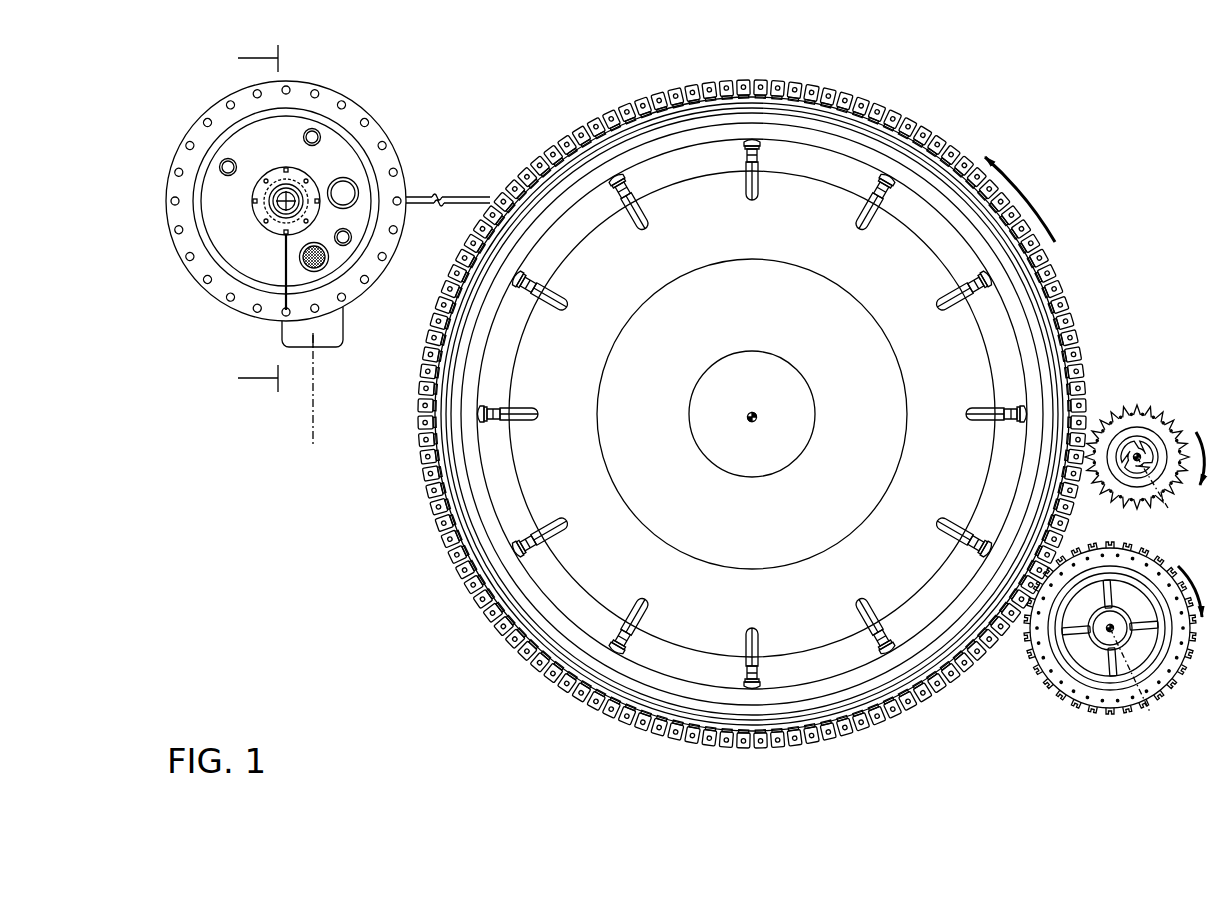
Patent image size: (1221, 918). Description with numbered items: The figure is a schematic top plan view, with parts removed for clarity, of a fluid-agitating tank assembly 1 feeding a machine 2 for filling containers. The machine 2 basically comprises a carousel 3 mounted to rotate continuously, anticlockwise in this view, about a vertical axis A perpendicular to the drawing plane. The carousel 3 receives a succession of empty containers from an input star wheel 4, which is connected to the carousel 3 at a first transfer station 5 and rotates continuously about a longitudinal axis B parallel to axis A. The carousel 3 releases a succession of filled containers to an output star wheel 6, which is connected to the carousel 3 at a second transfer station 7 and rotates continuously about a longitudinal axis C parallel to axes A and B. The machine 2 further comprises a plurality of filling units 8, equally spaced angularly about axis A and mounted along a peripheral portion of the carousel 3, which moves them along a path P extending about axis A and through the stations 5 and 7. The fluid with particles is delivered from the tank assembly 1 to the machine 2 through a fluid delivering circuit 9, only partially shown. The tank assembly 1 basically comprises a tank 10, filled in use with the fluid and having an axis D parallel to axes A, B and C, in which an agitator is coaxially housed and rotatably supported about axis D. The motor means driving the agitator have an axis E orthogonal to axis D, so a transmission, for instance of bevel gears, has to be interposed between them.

The fluid-agitating tank assembly 1 is at (302, 251).
The machine 2 is at (728, 445).
The carousel 3 is at (818, 143).
The input star wheel 4 is at (1132, 428).
The first transfer station 5 is at (1105, 385).
The output star wheel 6 is at (1100, 640).
The second transfer station 7 is at (1013, 654).
The filling units 8 is at (673, 745).
The fluid delivering circuit 9 is at (468, 195).
The tank 10 is at (272, 220).
The vertical axis A is at (749, 423).
The longitudinal axis B is at (1159, 492).
The longitudinal axis C is at (1139, 677).
The axis D is at (273, 226).
The axis E is at (311, 427).
The path P is at (1019, 191).